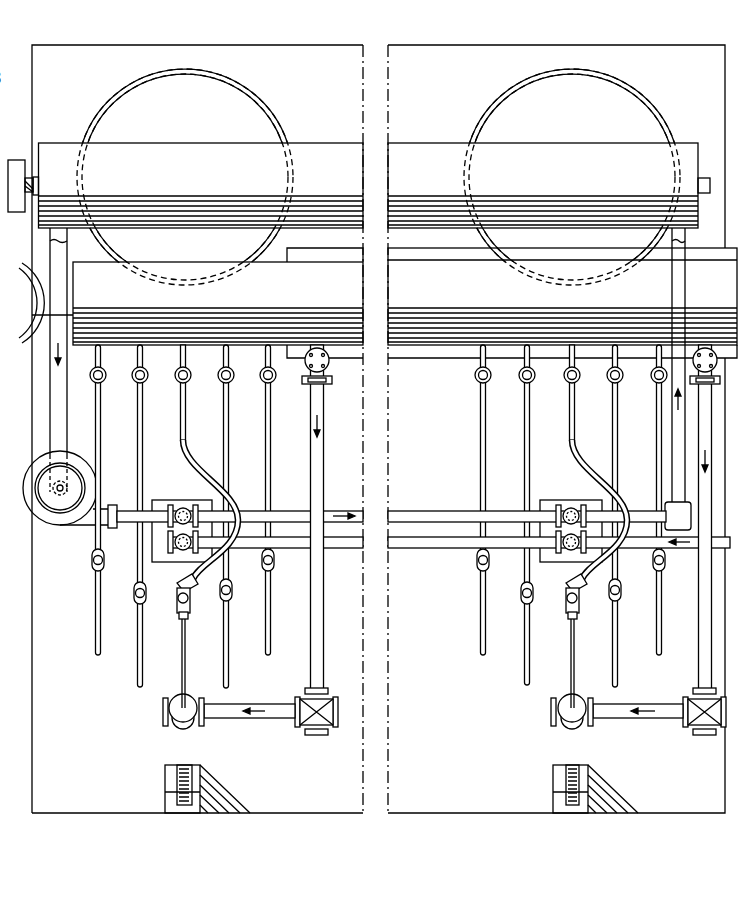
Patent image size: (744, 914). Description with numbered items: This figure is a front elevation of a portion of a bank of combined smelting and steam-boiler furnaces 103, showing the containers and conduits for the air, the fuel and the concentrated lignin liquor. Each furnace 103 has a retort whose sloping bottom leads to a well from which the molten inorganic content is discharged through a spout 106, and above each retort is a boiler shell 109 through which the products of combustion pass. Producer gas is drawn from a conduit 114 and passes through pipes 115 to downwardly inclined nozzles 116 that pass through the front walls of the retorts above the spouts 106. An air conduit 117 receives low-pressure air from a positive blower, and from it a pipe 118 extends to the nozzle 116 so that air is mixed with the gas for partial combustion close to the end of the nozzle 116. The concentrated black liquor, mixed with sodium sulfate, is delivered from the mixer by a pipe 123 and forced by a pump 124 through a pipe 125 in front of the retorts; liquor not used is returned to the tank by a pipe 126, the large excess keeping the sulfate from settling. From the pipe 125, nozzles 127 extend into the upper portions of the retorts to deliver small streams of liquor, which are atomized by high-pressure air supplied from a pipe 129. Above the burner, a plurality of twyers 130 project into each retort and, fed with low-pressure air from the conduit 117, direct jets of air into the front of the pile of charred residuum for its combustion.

The combined smelting and steam-boiler furnace 103 is at (42, 683).
The spout 106 is at (165, 799).
The boiler shell 109 is at (378, 177).
The producer gas conduit 114 is at (610, 256).
The gas pipe 115 is at (320, 482).
The gas nozzle 116 is at (183, 724).
The air conduit 117 is at (178, 268).
The air pipe 118 is at (187, 441).
The liquor pipe 123 is at (60, 436).
The pump 124 is at (64, 520).
The liquor distribution pipe 125 is at (428, 513).
The return pipe 126 is at (674, 437).
The liquor nozzle 127 is at (179, 520).
The high-pressure air pipe 129 is at (436, 549).
The twyer 130 is at (98, 657).